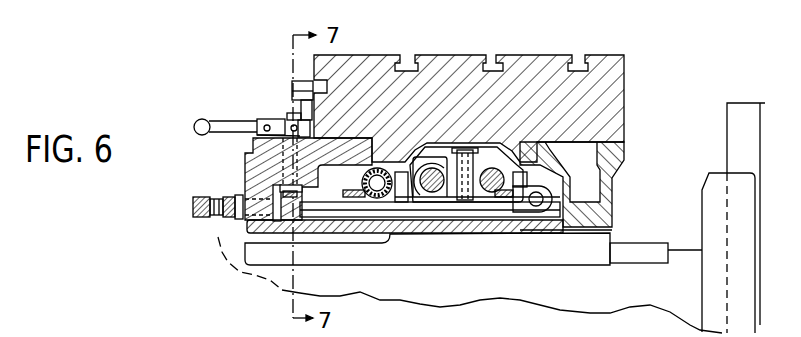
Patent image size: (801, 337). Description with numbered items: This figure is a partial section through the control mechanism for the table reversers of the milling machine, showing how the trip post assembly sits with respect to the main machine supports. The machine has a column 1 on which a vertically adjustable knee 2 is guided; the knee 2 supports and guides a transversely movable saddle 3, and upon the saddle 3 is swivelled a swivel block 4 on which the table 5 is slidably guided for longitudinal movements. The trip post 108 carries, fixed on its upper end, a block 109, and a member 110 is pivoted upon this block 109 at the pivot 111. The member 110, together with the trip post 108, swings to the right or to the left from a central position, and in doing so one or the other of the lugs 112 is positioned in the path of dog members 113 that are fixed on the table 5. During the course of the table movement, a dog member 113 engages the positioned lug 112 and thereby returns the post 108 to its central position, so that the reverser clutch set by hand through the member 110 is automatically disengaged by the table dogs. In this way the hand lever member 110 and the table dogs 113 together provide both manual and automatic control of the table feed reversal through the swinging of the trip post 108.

The column 1 is at (735, 160).
The knee 2 is at (657, 243).
The saddle 3 is at (597, 238).
The swivel block 4 is at (628, 160).
The table 5 is at (624, 104).
The trip post 108 is at (262, 170).
The block 109 is at (262, 152).
The member 110 is at (206, 120).
The pivot 111 is at (248, 135).
The lugs 112 is at (291, 114).
The dog members 113 is at (294, 113).